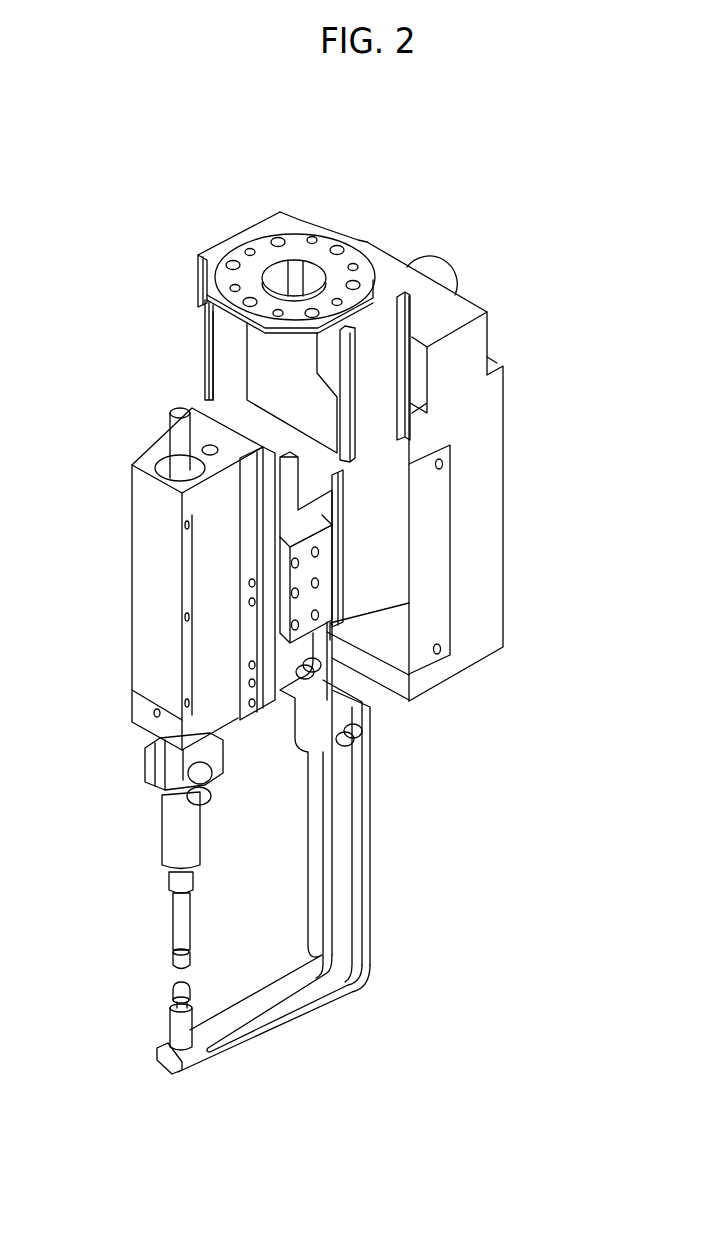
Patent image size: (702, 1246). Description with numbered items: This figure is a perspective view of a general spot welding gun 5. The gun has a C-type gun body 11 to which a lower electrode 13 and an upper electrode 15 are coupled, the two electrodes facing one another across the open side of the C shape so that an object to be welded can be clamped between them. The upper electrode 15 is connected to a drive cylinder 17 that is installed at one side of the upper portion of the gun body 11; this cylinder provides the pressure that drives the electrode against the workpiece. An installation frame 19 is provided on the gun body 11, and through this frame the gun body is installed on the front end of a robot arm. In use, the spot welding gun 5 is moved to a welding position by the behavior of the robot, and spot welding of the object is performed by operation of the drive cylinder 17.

The spot welding gun 5 is at (474, 704).
The C-type gun body 11 is at (342, 850).
The lower electrode 13 is at (152, 1025).
The upper electrode 15 is at (152, 918).
The drive cylinder 17 is at (112, 590).
The installation frame 19 is at (384, 475).